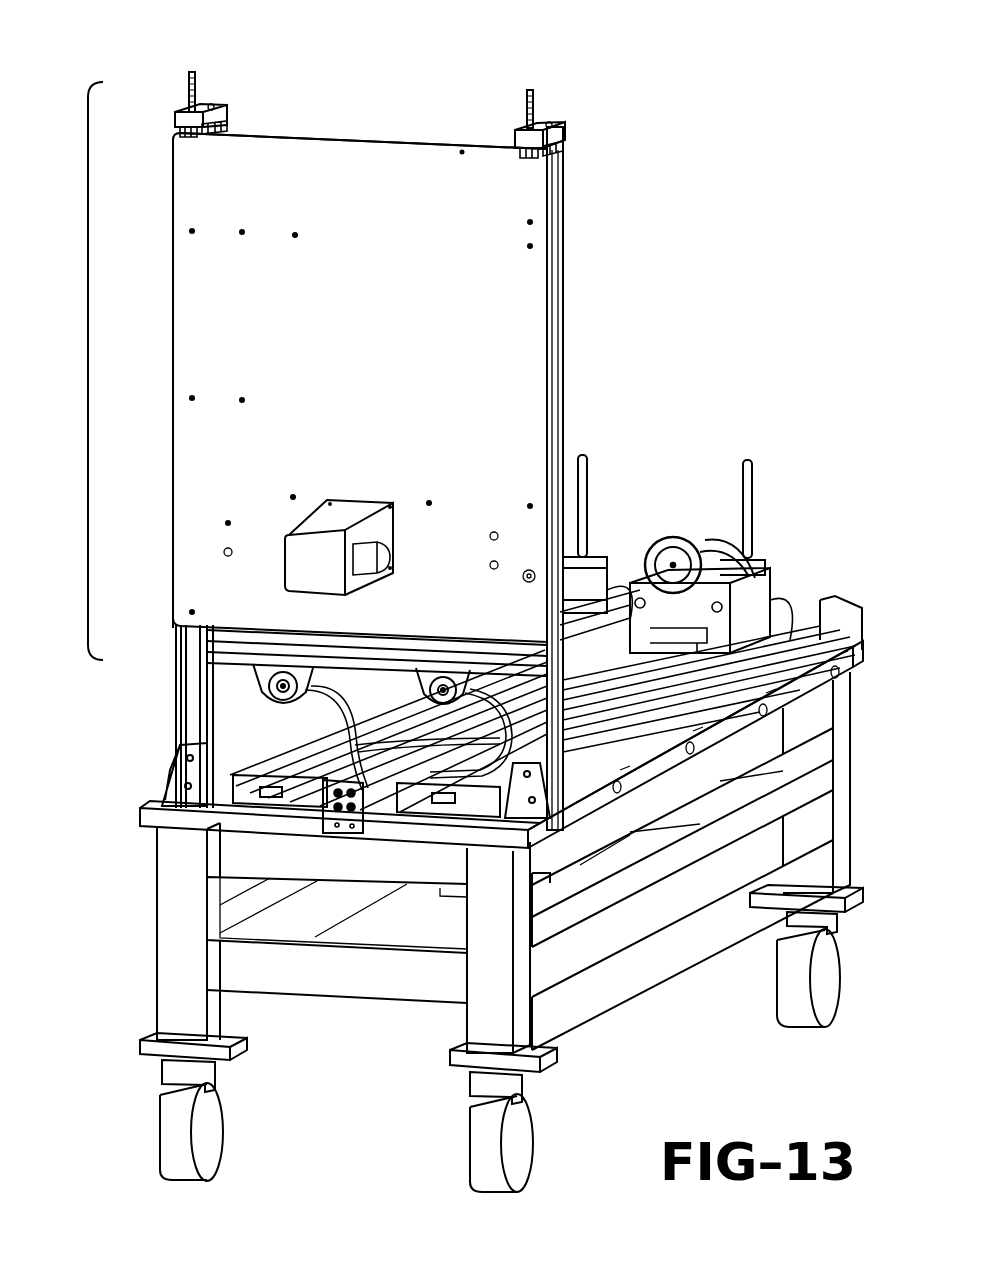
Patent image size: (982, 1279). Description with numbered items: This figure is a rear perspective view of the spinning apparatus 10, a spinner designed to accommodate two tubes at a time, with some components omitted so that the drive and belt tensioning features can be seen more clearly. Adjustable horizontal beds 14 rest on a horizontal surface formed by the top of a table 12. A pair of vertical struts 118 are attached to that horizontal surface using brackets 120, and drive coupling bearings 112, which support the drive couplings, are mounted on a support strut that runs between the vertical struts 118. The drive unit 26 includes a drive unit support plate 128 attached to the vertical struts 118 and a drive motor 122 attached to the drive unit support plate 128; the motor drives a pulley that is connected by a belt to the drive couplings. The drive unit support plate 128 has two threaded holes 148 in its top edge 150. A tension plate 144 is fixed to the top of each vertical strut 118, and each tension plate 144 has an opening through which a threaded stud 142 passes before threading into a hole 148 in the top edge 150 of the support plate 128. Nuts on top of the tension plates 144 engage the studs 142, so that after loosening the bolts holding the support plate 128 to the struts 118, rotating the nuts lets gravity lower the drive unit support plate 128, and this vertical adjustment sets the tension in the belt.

The spinning apparatus 10 is at (752, 308).
The table 12 is at (670, 887).
The horizontal bed 14 is at (793, 640).
The drive unit 26 is at (88, 372).
The drive coupling bearing 112 is at (267, 670).
The vertical strut 118 is at (563, 255).
The bracket 120 is at (180, 785).
The drive motor 122 is at (298, 555).
The drive unit support plate 128 is at (373, 305).
The threaded stud 142 is at (190, 96).
The tension plate 144 is at (222, 106).
The threaded hole 148 is at (180, 128).
The top edge 150 is at (340, 140).